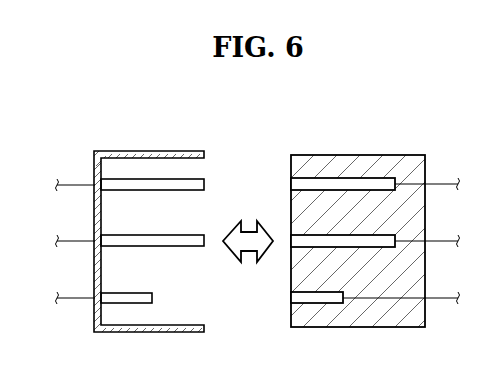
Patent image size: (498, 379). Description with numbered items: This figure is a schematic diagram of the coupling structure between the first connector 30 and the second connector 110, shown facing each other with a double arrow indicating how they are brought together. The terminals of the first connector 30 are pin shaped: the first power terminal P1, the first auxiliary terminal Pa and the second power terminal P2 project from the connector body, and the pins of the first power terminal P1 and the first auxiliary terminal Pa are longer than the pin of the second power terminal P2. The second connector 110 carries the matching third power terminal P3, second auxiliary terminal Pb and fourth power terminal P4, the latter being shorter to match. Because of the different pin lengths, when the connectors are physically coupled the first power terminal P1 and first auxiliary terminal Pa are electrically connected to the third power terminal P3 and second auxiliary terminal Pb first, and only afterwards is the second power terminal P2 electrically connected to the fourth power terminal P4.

The first connector 30 is at (119, 151).
The first power terminal P1 is at (180, 178).
The first auxiliary terminal Pa is at (179, 235).
The second power terminal P2 is at (138, 293).
The second connector 110 is at (403, 156).
The third power terminal P3 is at (308, 178).
The second auxiliary terminal Pb is at (345, 234).
The fourth power terminal P4 is at (308, 303).